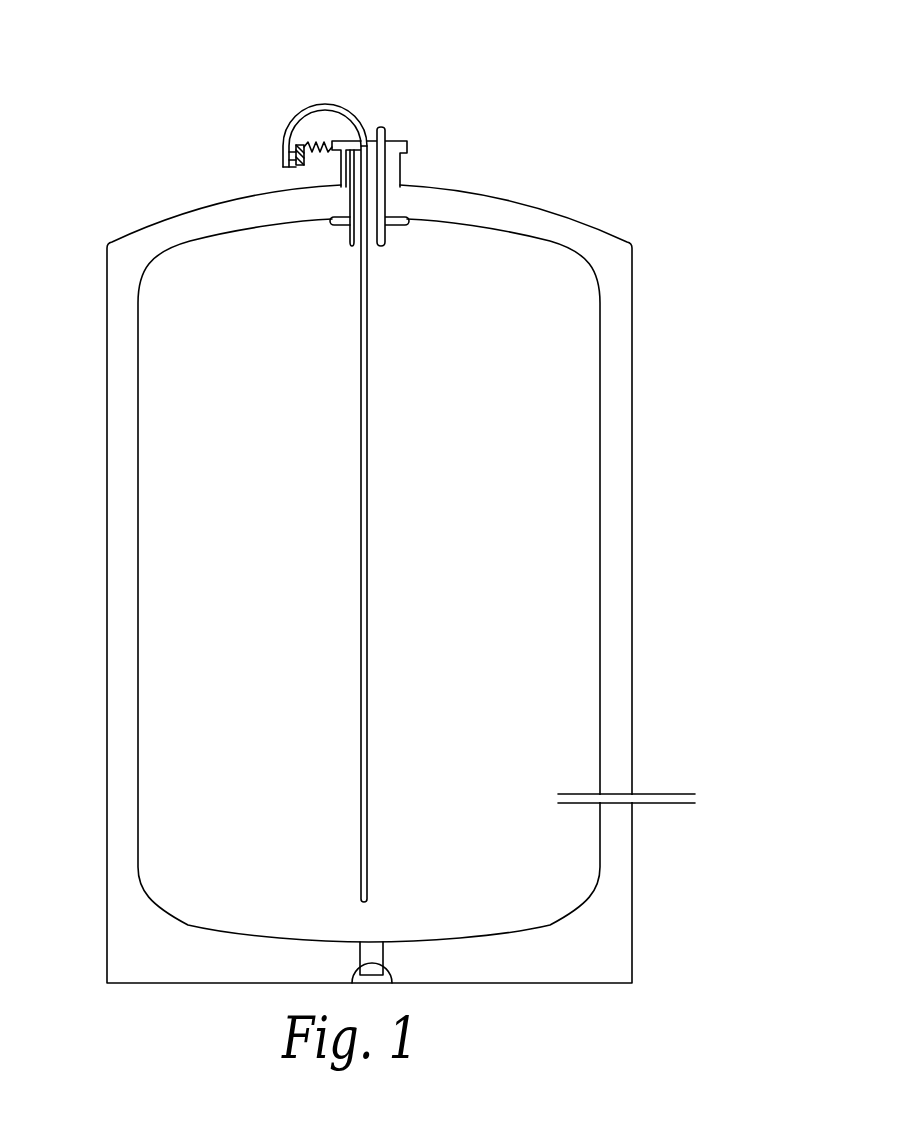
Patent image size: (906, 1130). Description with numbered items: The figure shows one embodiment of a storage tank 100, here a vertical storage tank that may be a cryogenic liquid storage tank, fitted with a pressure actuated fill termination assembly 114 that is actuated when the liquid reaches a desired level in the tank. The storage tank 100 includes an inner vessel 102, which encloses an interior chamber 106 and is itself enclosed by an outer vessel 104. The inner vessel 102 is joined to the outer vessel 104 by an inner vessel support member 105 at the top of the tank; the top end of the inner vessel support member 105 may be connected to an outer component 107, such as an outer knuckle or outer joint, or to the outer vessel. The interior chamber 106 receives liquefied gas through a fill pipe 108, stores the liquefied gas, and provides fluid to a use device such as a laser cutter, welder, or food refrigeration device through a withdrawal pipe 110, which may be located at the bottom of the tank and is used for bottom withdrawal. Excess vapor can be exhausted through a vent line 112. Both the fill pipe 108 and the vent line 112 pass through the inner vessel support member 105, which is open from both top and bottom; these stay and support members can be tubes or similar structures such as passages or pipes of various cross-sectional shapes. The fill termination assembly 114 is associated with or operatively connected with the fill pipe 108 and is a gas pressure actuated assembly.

The storage tank 100 is at (131, 80).
The inner vessel 102 is at (600, 295).
The outer vessel 104 is at (632, 358).
The inner vessel support member 105 is at (405, 183).
The interior chamber 106 is at (545, 550).
The outer component 107 is at (397, 147).
The fill pipe 108 is at (365, 283).
The withdrawal pipe 110 is at (668, 793).
The vent line 112 is at (388, 238).
The fill termination assembly 114 is at (310, 171).